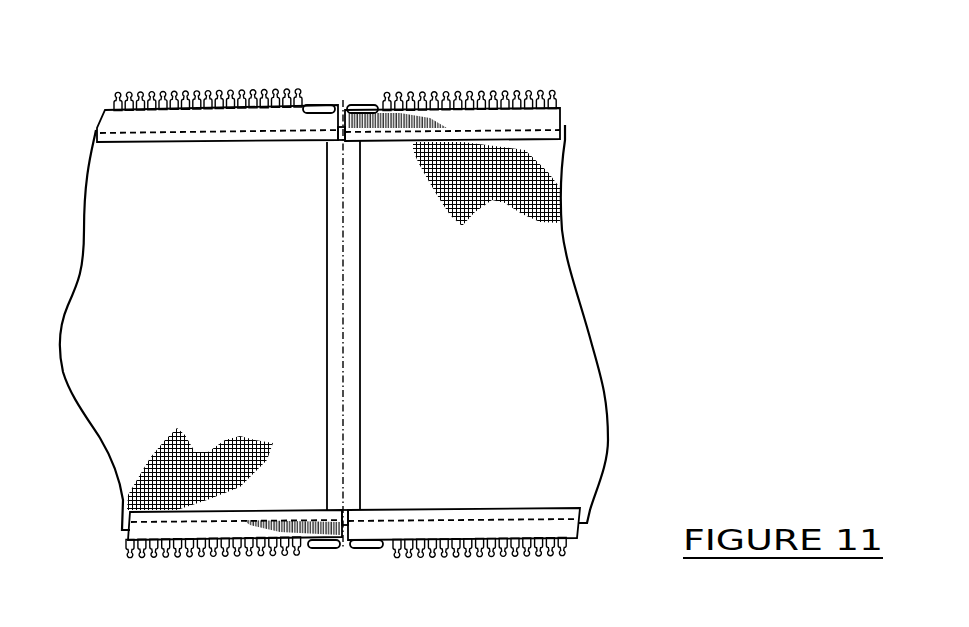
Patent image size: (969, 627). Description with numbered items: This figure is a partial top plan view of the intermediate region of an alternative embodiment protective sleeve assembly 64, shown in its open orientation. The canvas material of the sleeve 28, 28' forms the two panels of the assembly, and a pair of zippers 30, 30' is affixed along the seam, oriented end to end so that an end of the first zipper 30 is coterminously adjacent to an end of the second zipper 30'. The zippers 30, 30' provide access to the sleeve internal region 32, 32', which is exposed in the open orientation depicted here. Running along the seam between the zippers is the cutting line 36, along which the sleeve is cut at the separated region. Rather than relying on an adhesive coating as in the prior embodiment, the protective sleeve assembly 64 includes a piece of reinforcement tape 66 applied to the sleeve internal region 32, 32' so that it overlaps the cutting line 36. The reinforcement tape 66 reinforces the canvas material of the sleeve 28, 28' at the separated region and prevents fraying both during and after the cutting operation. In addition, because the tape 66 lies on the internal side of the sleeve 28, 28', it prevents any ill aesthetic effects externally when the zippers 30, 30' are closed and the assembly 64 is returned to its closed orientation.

The sleeve 28 is at (517, 324).
The sleeve 28' is at (82, 330).
The zipper 30 is at (452, 95).
The zipper 30' is at (217, 95).
The sleeve internal region 32 is at (519, 469).
The sleeve internal region 32' is at (187, 471).
The cutting line 36 is at (365, 100).
The protective sleeve assembly 64 is at (318, 52).
The reinforcement tape 66 is at (359, 263).